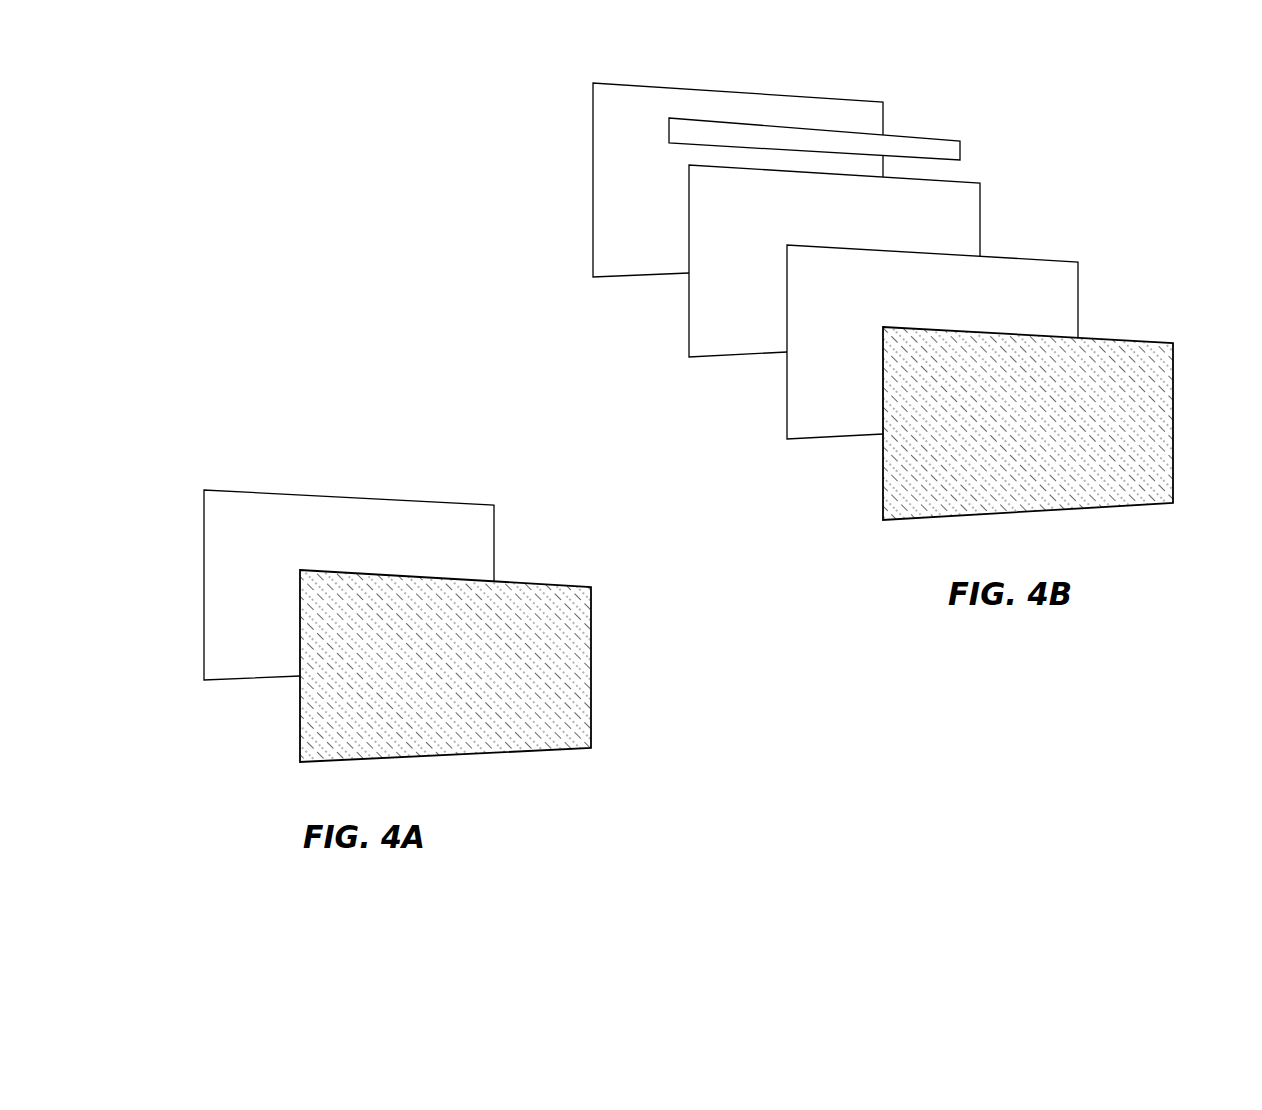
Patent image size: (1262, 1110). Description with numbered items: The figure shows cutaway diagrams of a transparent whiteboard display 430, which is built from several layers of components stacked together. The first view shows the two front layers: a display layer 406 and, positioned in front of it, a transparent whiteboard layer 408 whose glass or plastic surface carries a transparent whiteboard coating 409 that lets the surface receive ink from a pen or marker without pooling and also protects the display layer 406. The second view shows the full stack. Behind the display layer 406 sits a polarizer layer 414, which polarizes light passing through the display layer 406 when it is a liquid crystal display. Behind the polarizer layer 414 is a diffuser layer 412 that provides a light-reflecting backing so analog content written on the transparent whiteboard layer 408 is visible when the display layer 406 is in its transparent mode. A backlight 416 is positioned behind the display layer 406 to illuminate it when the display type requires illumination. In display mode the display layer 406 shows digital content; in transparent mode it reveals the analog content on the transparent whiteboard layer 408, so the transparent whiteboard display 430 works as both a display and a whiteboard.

In FIG. 4A, the transparent whiteboard display 430 is at (152, 482).
In FIG. 4B, the transparent whiteboard display 430 is at (539, 93).
In FIG. 4A, the display layer 406 is at (204, 680).
In FIG. 4B, the display layer 406 is at (787, 439).
In FIG. 4A, the transparent whiteboard layer 408 is at (300, 762).
In FIG. 4B, the transparent whiteboard layer 408 is at (883, 520).
In FIG. 4A, the transparent whiteboard coating 409 is at (558, 700).
In FIG. 4B, the transparent whiteboard coating 409 is at (1128, 445).
In FIG. 4B, the diffuser layer 412 is at (593, 277).
In FIG. 4B, the polarizer layer 414 is at (689, 357).
In FIG. 4B, the backlight 416 is at (960, 160).